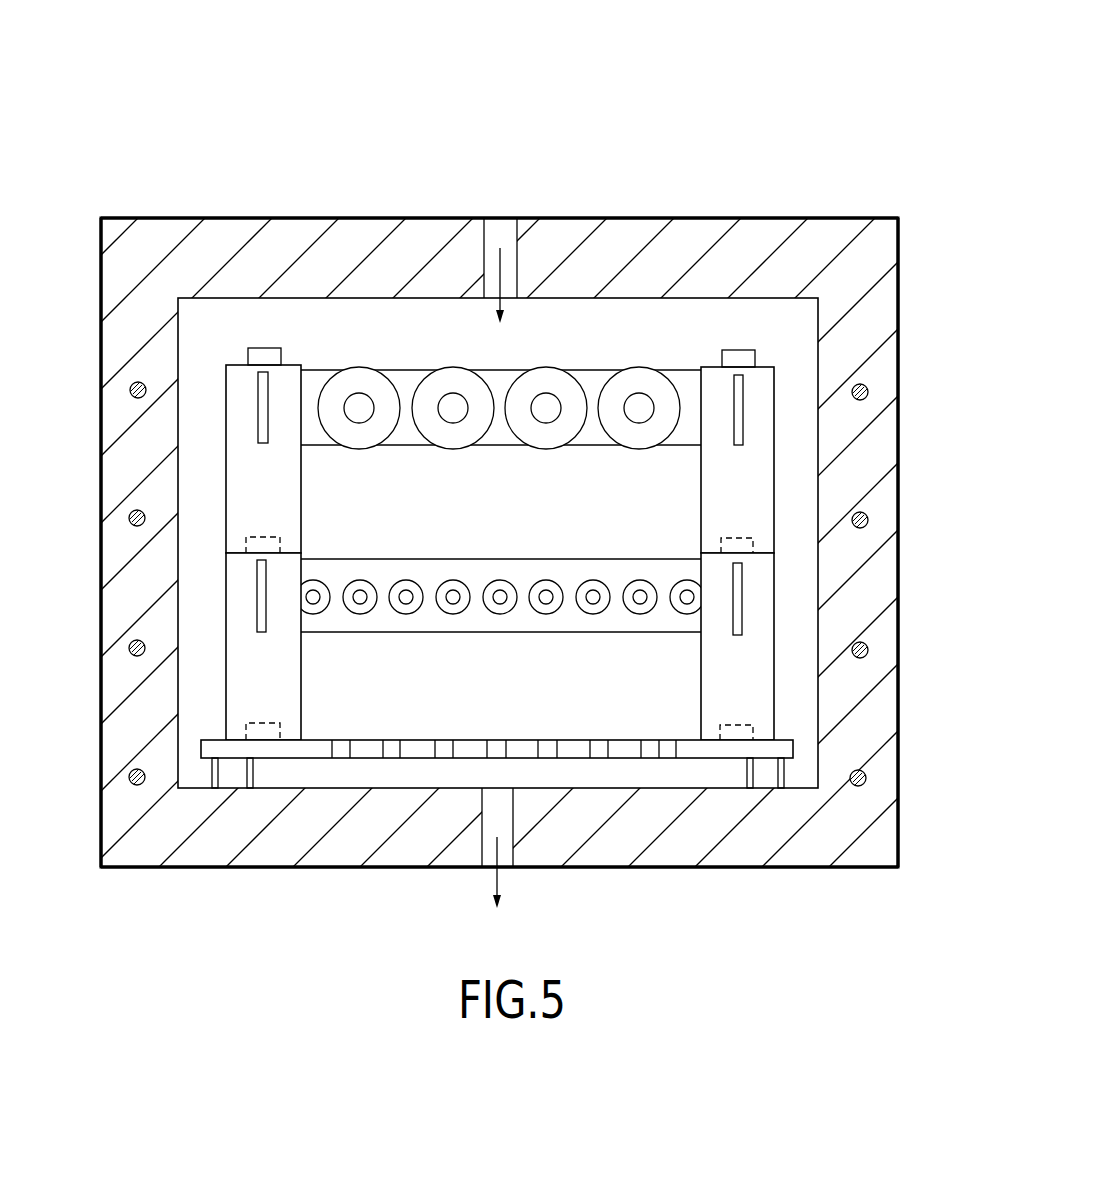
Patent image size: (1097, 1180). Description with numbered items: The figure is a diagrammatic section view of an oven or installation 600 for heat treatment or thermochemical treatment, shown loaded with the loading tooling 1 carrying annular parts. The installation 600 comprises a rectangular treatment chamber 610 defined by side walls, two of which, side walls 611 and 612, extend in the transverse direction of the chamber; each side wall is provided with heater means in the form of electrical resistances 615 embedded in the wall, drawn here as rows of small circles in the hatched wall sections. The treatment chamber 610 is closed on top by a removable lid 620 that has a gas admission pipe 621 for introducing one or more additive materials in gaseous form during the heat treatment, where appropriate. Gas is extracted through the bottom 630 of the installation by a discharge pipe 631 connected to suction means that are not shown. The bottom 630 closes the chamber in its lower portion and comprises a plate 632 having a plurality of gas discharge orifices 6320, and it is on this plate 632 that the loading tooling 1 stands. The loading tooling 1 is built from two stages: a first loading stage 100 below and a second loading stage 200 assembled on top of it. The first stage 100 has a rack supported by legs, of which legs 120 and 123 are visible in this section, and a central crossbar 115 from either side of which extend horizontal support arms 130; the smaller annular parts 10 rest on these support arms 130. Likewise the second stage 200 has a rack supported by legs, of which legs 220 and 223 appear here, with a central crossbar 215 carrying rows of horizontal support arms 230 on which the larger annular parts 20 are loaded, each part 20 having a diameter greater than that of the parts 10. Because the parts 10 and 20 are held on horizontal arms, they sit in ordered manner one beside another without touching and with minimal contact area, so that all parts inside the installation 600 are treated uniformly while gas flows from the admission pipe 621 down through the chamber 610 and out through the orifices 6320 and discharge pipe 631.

The installation 600 is at (699, 82).
The loading tooling 1 is at (347, 326).
The treatment chamber 610 is at (428, 340).
The side wall 611 is at (117, 592).
The side wall 612 is at (890, 510).
The electrical resistances 615 is at (128, 648).
The removable lid 620 is at (758, 232).
The gas admission pipe 621 is at (498, 228).
The bottom 630 is at (726, 852).
The discharge pipe 631 is at (505, 857).
The plate 632 is at (273, 753).
The gas discharge orifices 6320 is at (343, 745).
The second loading stage 200 is at (793, 430).
The central crossbar 215 is at (592, 385).
The leg 220 is at (301, 481).
The leg 223 is at (701, 499).
The support arms 230 is at (546, 410).
The annular parts 20 is at (632, 438).
The first loading stage 100 is at (788, 620).
The central crossbar 115 is at (457, 565).
The leg 120 is at (301, 668).
The leg 123 is at (701, 683).
The support arms 130 is at (453, 610).
The annular parts 10 is at (547, 612).